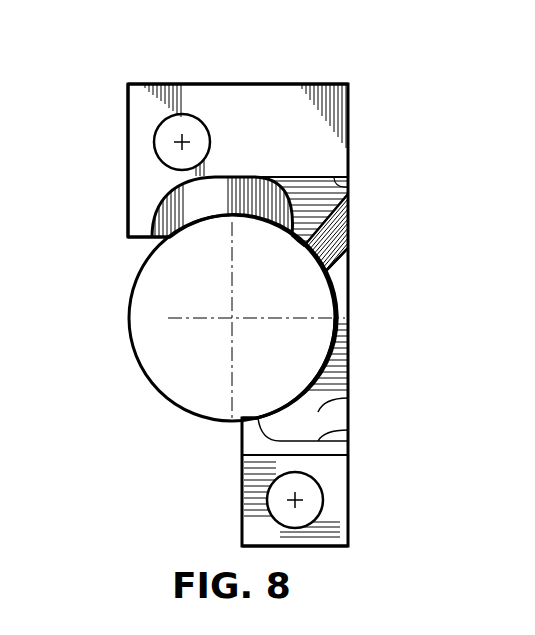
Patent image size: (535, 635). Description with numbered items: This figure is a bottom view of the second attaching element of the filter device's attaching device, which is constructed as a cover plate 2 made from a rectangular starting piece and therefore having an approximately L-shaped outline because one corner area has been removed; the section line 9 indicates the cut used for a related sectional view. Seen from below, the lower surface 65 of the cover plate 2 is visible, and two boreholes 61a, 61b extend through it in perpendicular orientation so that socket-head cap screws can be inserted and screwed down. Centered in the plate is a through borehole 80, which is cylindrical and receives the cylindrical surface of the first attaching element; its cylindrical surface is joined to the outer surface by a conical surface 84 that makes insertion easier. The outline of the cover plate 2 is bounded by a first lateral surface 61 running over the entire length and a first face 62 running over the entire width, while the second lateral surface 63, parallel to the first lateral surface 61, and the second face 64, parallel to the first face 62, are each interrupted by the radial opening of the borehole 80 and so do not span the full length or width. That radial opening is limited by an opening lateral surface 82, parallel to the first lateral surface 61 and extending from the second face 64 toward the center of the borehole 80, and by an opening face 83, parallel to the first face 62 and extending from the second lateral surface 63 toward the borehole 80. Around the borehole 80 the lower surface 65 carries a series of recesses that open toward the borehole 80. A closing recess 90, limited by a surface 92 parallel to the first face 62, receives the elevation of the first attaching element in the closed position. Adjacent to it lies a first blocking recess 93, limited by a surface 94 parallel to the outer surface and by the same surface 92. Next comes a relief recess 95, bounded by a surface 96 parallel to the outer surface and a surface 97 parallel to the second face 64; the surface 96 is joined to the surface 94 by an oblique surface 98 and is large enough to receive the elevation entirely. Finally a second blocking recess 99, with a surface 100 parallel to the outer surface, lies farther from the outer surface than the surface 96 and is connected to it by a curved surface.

The cover plate 2 is at (72, 82).
The section line 9- 9 is at (221, 34).
The first lateral surface 61 is at (352, 132).
The borehole 61a is at (268, 504).
The borehole 61b is at (154, 149).
The first face 62 is at (255, 84).
The second lateral surface 63 is at (127, 179).
The second face 64 is at (318, 547).
The lower surface 65 is at (282, 126).
The through borehole 80 is at (283, 309).
The opening lateral surface 82 is at (242, 515).
The opening face 83 is at (137, 241).
The conical surface 84 is at (283, 400).
The closing recess 90 is at (207, 208).
The surface 92 is at (350, 184).
The first blocking recess 93 is at (299, 239).
The surface 94 is at (345, 210).
The relief recess 95 is at (317, 391).
The surface 96 is at (349, 398).
The surface 97 is at (349, 431).
The oblique surface 98 is at (347, 257).
The second blocking recess 99 is at (246, 413).
The surface 100 is at (257, 447).